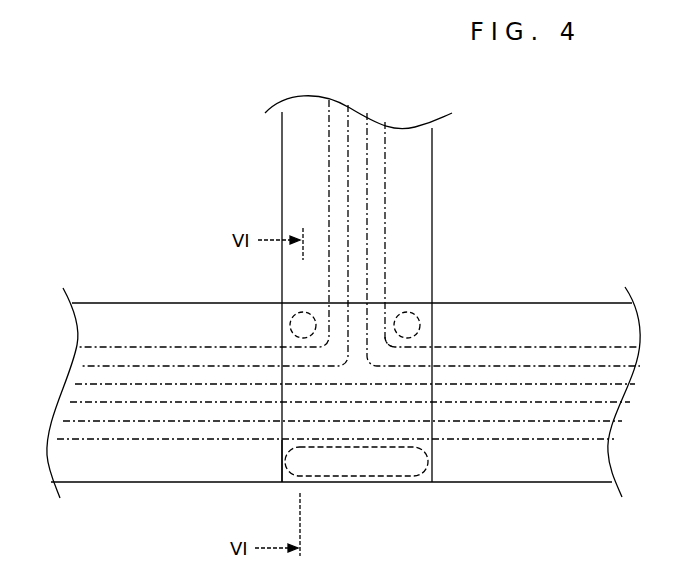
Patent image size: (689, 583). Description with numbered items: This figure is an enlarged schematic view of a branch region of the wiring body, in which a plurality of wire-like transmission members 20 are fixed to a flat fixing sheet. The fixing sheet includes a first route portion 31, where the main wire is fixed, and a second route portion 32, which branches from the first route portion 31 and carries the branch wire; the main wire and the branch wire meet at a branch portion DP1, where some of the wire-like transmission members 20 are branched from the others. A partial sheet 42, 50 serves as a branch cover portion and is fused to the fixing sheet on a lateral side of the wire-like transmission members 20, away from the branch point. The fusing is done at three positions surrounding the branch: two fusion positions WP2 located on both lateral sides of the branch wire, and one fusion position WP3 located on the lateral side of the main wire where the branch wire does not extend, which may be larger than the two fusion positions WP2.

The wire-like transmission member 20 is at (376, 200).
The first route portion 31 is at (128, 318).
The second route portion 32 is at (413, 173).
The partial sheet 42 is at (222, 482).
The joint portion 50 is at (284, 457).
The fusion position WP2 is at (293, 313).
The fusion position WP3 is at (397, 478).
The branch portion DP1 is at (385, 346).